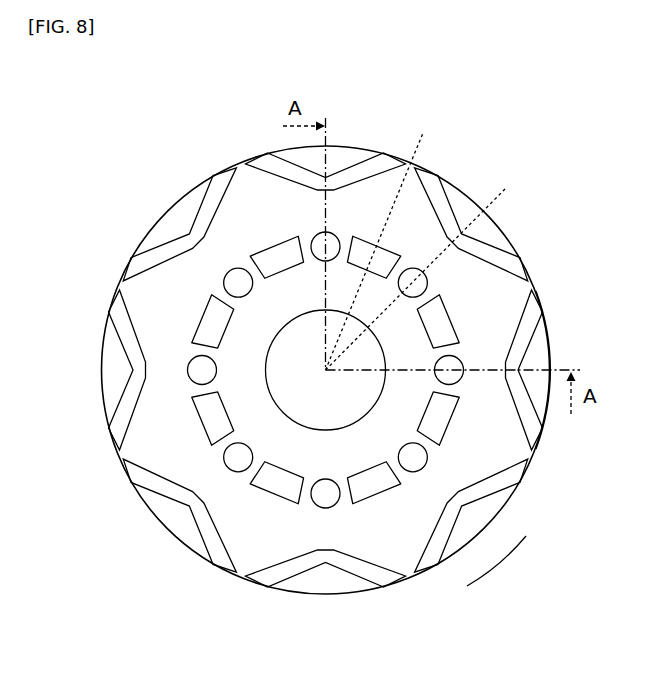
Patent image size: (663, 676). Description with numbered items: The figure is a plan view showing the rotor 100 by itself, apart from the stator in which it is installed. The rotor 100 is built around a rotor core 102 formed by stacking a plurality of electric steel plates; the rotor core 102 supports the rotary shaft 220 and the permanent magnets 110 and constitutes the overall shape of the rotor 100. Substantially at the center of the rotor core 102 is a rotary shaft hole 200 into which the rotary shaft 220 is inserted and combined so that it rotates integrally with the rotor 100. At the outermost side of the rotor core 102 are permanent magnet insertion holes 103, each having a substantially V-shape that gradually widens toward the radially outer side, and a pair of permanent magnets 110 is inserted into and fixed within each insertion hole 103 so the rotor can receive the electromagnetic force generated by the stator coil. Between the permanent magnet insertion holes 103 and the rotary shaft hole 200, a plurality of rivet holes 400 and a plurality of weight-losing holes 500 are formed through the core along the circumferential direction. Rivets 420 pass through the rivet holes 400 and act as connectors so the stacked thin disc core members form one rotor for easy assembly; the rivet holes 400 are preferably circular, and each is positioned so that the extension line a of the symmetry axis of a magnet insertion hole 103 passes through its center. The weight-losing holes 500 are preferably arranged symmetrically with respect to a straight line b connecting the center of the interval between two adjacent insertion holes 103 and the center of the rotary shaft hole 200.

The rotor 100 is at (210, 101).
The rotor core 102 is at (553, 347).
The permanent magnet insertion hole 103 is at (492, 500).
The permanent magnet 110 is at (470, 495).
The rotary shaft hole 200 is at (380, 347).
The rotary shaft 220 is at (350, 407).
The rivet hole 400 is at (207, 502).
The rivet 420 is at (230, 460).
The weight-losing hole 500 is at (375, 240).
The extension line of symmetry axis a is at (424, 269).
The straight line b is at (378, 240).